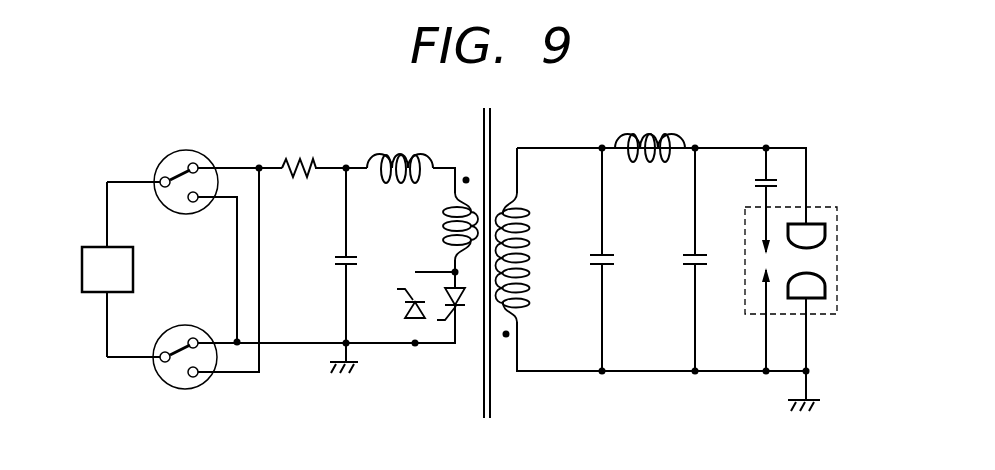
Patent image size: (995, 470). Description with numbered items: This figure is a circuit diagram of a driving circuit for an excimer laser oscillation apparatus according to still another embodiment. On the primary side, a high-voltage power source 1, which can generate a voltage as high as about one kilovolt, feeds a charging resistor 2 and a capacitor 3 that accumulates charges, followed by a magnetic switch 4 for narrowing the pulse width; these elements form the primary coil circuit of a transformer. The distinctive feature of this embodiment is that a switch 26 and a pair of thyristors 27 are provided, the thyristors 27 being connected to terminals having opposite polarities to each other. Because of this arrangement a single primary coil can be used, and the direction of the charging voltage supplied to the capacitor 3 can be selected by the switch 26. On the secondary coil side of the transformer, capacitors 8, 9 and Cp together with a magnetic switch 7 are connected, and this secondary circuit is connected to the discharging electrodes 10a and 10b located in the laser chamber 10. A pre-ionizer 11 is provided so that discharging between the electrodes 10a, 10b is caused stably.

The high-voltage power source 1 is at (136, 263).
The charging resistor 2 is at (296, 159).
The capacitor 3 is at (353, 258).
The magnetic switch 4 is at (395, 192).
The magnetic switch 7 is at (643, 170).
The capacitor 8 is at (611, 255).
The capacitor 9 is at (754, 182).
The laser chamber 10 is at (823, 241).
The discharging electrode 10a is at (826, 242).
The discharging electrode 10b is at (826, 288).
The pre-ionizer 11 is at (761, 260).
The switch 26 is at (203, 153).
The pair of thyristors 27 is at (408, 313).
The capacitor Cp is at (677, 260).